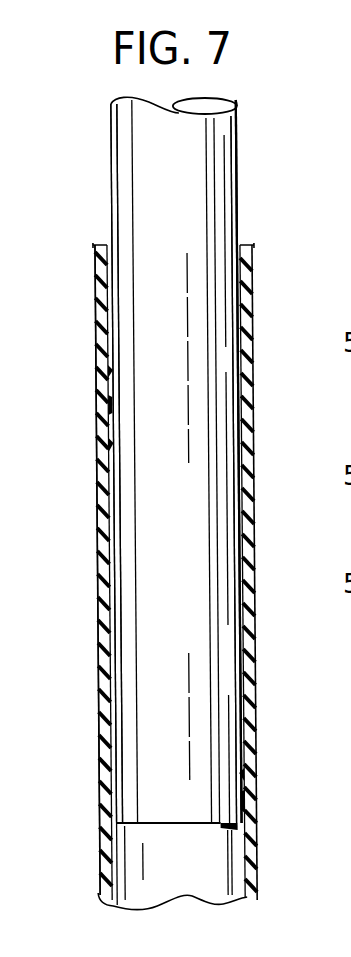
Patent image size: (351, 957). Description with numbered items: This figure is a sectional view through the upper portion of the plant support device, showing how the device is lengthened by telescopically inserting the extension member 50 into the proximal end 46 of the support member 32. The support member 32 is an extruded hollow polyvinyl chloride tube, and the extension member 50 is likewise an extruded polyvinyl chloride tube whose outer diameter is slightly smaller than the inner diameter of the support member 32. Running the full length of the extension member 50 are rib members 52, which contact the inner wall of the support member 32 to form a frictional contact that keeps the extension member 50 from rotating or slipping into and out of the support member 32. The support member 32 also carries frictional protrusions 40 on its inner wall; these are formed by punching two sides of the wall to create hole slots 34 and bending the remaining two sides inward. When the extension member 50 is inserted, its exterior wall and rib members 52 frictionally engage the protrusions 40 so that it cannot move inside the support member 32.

The support member 32 is at (97, 600).
The hole slots 34 is at (100, 402).
The frictional protrusions 40 is at (105, 373).
The proximal end 46 is at (100, 280).
The extension member 50 is at (193, 163).
The rib members 52 is at (127, 146).